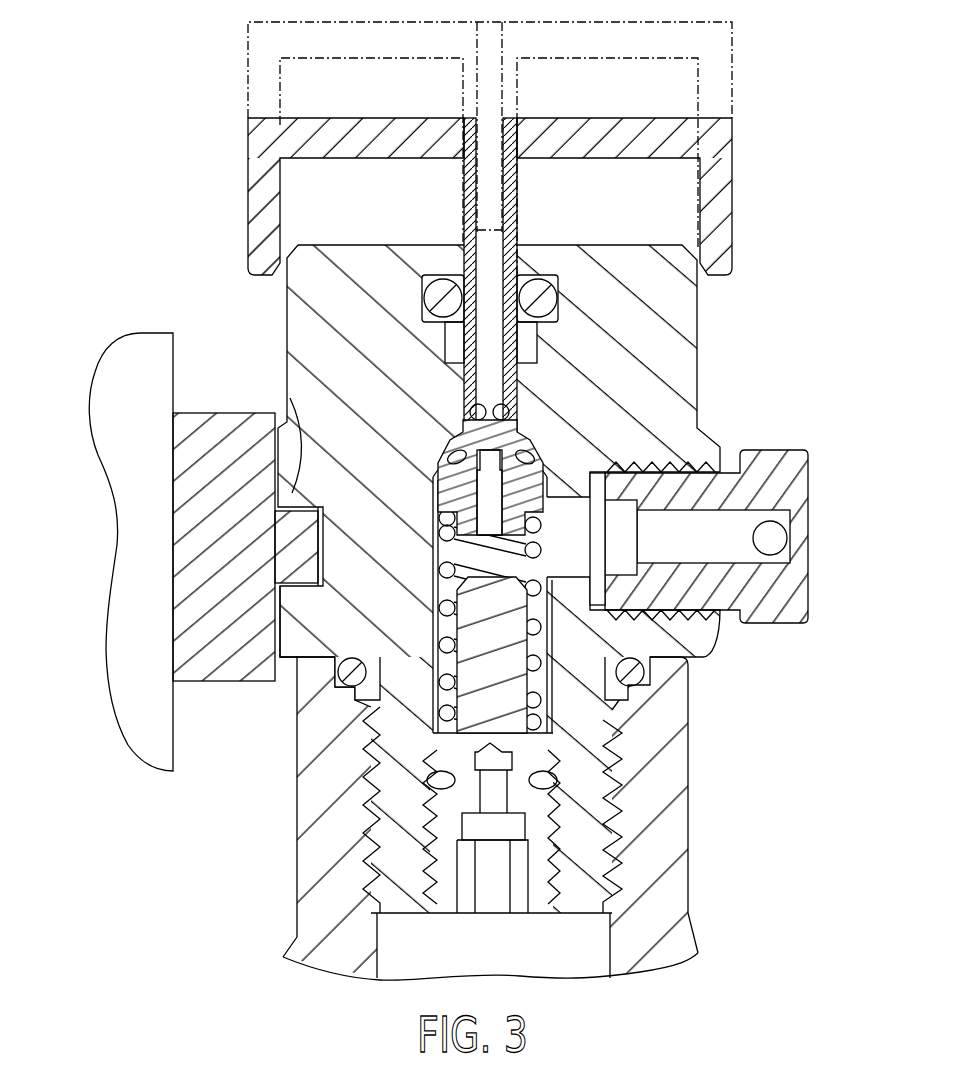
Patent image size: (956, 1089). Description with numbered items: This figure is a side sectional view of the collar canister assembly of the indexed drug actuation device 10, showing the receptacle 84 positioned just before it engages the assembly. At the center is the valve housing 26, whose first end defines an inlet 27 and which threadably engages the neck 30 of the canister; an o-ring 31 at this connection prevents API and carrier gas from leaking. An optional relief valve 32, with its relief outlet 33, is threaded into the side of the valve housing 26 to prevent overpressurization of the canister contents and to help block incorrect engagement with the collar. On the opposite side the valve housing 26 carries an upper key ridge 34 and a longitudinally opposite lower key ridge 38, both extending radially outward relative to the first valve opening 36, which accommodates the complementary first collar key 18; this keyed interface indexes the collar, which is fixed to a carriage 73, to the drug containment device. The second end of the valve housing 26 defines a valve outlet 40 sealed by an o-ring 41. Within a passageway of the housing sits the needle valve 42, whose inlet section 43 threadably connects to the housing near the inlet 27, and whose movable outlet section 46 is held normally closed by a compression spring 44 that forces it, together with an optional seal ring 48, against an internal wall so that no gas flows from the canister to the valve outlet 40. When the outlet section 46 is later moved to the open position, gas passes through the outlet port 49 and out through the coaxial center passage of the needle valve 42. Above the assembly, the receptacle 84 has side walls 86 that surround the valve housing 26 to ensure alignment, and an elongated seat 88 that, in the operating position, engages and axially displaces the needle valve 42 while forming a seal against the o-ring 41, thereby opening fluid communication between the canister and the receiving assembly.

The indexed drug actuation device 10 is at (130, 247).
The first collar key 18 is at (171, 547).
The valve housing 26 is at (683, 380).
The inlet 27 is at (528, 922).
The neck 30 is at (675, 827).
The o-ring 31 is at (645, 678).
The relief valve 32 is at (722, 516).
The relief outlet 33 is at (784, 548).
The upper key ridge 34 is at (290, 398).
The first valve opening 36 is at (313, 550).
The lower key ridge 38 is at (298, 645).
The valve outlet 40 is at (530, 235).
The o-ring 41 is at (423, 275).
The needle valve 42 is at (517, 383).
The inlet section 43 is at (556, 746).
The compression spring 44 is at (443, 557).
The movable outlet section 46 is at (523, 497).
The seal ring 48 is at (482, 471).
The outlet port 49 is at (462, 410).
The carriage 73 is at (135, 734).
The receptacle 84 is at (478, 191).
The side walls 86 is at (718, 195).
The elongated seat 88 is at (521, 275).